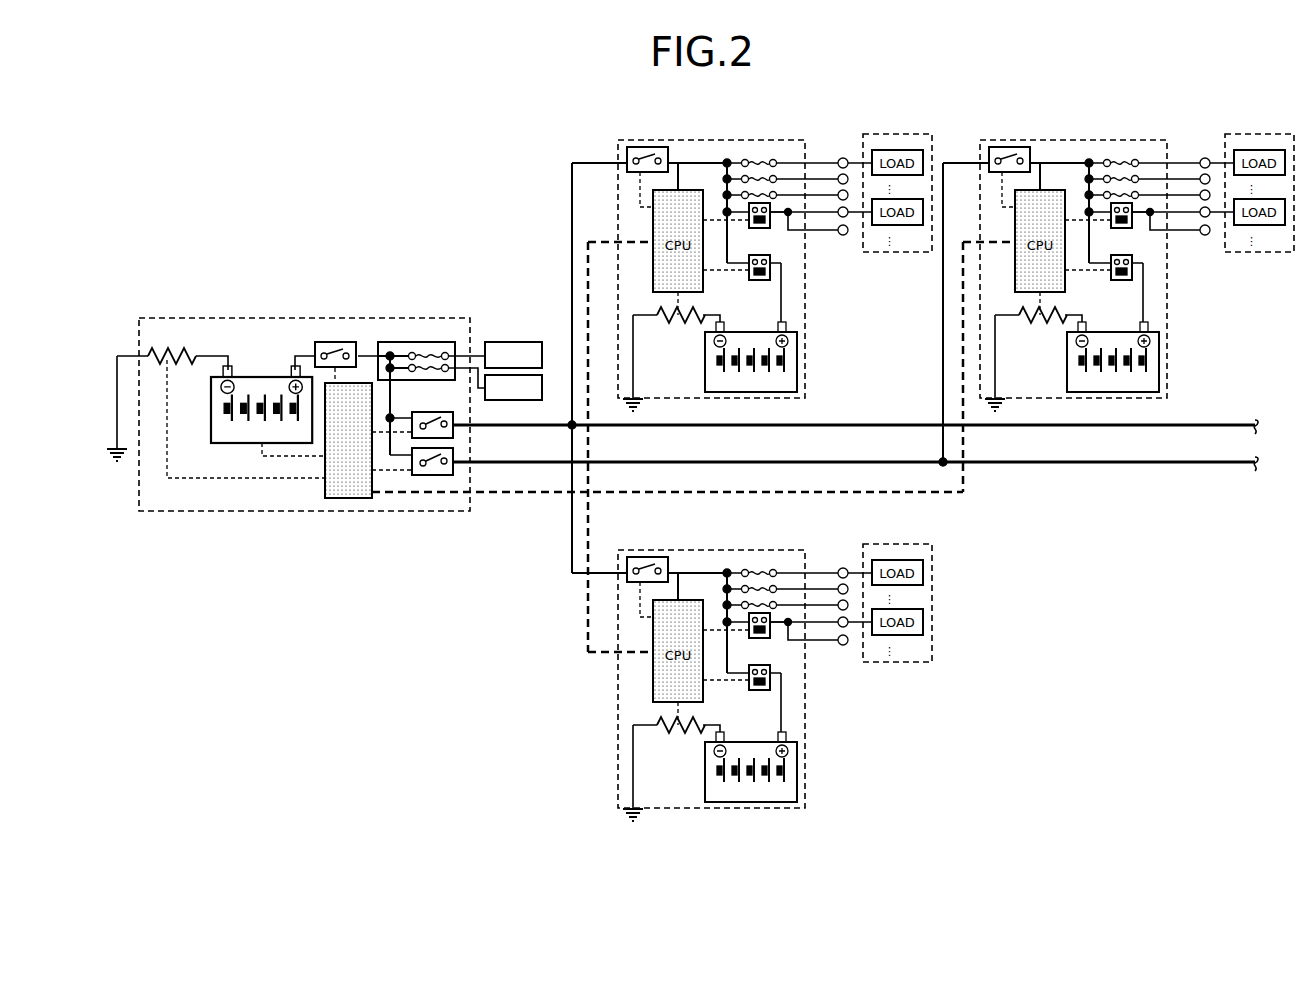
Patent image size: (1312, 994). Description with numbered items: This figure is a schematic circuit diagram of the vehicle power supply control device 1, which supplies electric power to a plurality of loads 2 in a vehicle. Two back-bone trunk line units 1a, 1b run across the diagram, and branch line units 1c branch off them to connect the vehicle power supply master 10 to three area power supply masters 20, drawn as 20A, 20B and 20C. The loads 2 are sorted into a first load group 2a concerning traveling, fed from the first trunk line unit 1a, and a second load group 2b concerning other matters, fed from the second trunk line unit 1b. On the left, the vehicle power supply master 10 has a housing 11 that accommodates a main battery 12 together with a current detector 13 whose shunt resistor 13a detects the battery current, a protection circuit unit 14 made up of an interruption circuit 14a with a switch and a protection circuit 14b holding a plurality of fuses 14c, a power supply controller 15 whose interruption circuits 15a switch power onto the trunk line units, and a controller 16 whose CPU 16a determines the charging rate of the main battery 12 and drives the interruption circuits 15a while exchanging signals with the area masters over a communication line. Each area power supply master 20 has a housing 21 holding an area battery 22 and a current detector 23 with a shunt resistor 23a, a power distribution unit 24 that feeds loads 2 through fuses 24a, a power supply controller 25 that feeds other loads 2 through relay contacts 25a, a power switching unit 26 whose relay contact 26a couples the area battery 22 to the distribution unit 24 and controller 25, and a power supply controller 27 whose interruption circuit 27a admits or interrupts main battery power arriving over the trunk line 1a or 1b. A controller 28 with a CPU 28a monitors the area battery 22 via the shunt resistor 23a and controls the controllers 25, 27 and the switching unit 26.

The vehicle power supply control device 1 is at (531, 126).
The first trunk line unit 1a is at (821, 425).
The second trunk line unit 1b is at (826, 462).
The branch line unit 1c is at (572, 445).
The load 2 is at (553, 391).
The first load group 2a is at (897, 390).
The second load group 2b is at (1259, 185).
The vehicle power supply master 10 is at (446, 321).
The housing 11 is at (325, 412).
The main battery 12 is at (258, 377).
The current detector 13 is at (181, 328).
The shunt resistor 13a is at (185, 350).
The protection circuit unit 14 is at (322, 282).
The interruption circuit 14a is at (337, 341).
The protection circuit 14b is at (386, 342).
The fuse 14c is at (431, 350).
The power supply controller 15 is at (477, 441).
The interruption circuit 15a is at (455, 418).
The controller 16 is at (350, 463).
The CPU 16a is at (348, 498).
The area power supply master 20 is at (782, 138).
The area power supply master 20A is at (711, 269).
The area power supply master 20B is at (711, 679).
The area power supply master 20C is at (1073, 269).
The housing 21 is at (924, 465).
The area battery 22 is at (955, 562).
The current detector 23 is at (901, 515).
The shunt resistor 23a is at (901, 515).
The power distribution unit 24 is at (933, 396).
The fuse 24a is at (933, 396).
The power supply controller 25 is at (982, 440).
The relay contact 25a is at (982, 440).
The power switching unit 26 is at (983, 477).
The relay contact 26a is at (983, 477).
The power supply controller 27 is at (821, 346).
The interruption circuit 27a is at (821, 346).
The controller 28 is at (871, 406).
The CPU 28a is at (871, 406).